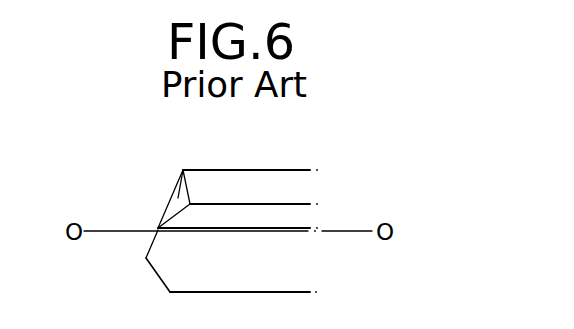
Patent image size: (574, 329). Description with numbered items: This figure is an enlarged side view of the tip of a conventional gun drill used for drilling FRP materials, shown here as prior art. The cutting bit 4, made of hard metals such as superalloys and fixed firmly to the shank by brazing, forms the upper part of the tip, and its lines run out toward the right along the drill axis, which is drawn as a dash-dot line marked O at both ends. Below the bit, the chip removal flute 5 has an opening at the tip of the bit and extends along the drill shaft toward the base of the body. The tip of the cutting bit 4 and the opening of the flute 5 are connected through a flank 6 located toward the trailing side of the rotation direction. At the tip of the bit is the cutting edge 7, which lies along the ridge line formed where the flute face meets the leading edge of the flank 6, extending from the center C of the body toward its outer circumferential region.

The cutting bit 4 is at (287, 162).
The chip removal flute 5 is at (279, 280).
The flank 6 is at (180, 201).
The cutting edge 7 is at (156, 278).
The center of the body C is at (152, 225).